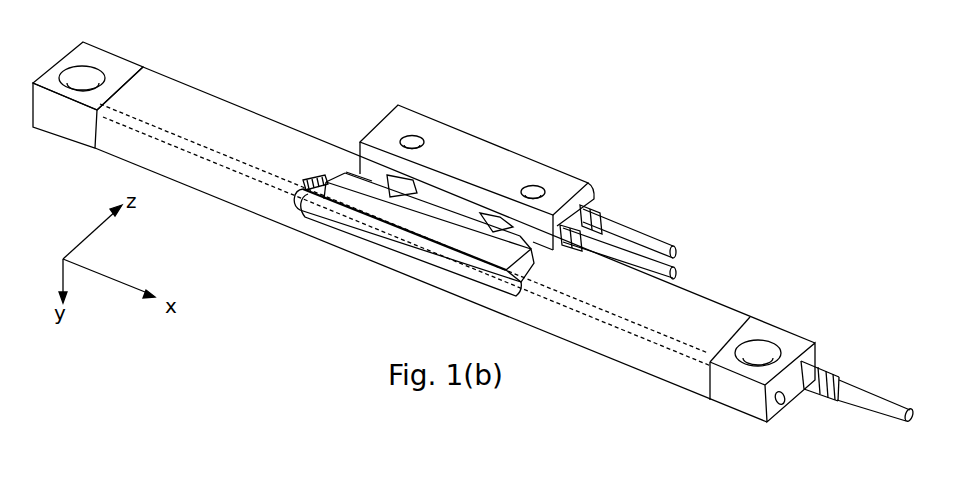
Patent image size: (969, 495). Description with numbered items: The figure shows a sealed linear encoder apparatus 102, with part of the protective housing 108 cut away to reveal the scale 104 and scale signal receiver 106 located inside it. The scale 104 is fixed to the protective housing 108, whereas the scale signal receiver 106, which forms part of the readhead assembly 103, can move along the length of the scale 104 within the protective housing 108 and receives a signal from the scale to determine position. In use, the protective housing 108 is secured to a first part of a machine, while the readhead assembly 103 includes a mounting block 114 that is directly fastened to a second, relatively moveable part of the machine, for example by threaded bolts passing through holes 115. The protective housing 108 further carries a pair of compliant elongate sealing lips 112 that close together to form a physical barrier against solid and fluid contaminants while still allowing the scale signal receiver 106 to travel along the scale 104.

The sealed linear encoder apparatus 102 is at (760, 80).
The readhead assembly 103 is at (646, 197).
The scale 104 is at (500, 288).
The scale signal receiver 106 is at (314, 170).
The protective housing 108 is at (683, 385).
The elongate sealing lips 112 is at (361, 174).
The mounting block 114 is at (512, 163).
The holes 115 is at (414, 136).